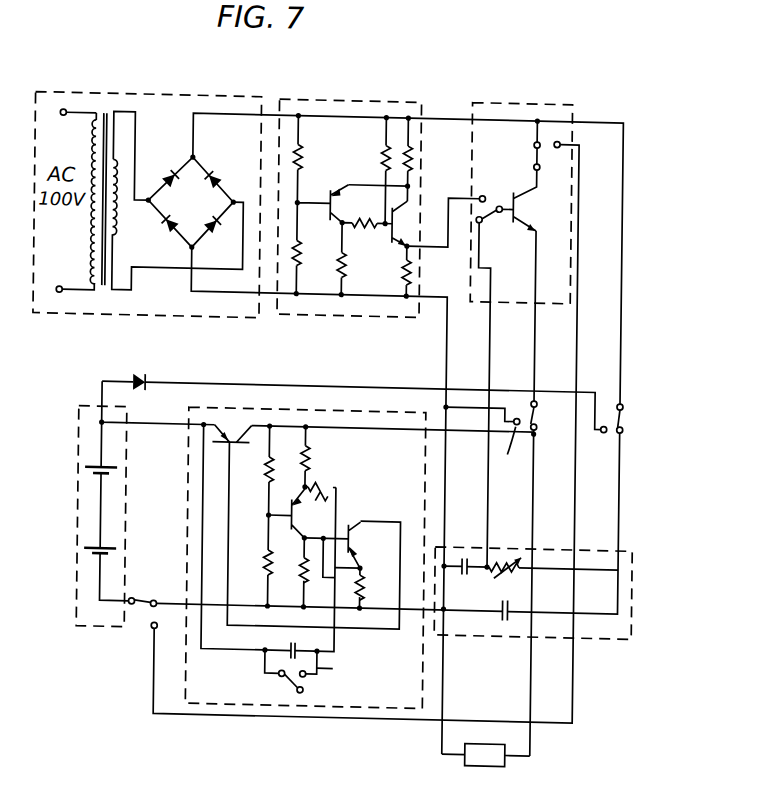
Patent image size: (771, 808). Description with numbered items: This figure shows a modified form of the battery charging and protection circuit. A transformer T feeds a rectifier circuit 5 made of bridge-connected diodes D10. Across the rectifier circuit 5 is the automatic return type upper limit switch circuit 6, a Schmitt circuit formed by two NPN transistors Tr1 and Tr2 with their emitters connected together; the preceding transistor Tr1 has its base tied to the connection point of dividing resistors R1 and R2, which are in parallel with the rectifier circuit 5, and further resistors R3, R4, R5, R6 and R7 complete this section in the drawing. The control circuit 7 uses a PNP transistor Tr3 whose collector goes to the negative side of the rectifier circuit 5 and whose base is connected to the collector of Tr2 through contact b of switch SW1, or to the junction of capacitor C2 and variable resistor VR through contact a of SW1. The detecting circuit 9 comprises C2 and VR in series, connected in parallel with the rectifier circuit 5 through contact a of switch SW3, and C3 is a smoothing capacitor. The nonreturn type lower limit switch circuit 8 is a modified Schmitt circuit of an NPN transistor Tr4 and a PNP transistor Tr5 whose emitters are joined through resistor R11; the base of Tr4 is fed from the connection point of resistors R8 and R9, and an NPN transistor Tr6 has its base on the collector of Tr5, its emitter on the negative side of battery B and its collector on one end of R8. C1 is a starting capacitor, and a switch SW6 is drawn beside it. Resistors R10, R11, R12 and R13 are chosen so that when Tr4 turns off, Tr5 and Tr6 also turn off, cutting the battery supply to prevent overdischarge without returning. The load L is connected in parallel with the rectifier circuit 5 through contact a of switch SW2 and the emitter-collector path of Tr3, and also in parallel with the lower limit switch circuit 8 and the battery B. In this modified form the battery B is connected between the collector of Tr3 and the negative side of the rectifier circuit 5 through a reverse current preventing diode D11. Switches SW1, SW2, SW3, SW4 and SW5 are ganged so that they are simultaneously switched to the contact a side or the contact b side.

The rectifier circuit 5 is at (199, 100).
The automatic return type upper limit switch circuit 6 is at (385, 102).
The control circuit 7 is at (484, 101).
The nonreturn type lower limit switch circuit 8 is at (366, 412).
The detecting circuit 9 is at (632, 546).
The transformer T is at (102, 117).
The bridge-connected diodes D10 is at (196, 176).
The dividing resistor R1 is at (310, 155).
The dividing resistor R2 is at (311, 254).
The resistor R3 is at (356, 266).
The resistor R4 is at (363, 212).
The resistor R5 is at (380, 160).
The resistor R6 is at (410, 160).
The resistor R7 is at (412, 272).
The NPN transistor Tr1 is at (343, 189).
The NPN transistor Tr2 is at (397, 227).
The PNP transistor Tr3 is at (526, 208).
The NPN transistor Tr4 is at (300, 515).
The PNP transistor Tr5 is at (354, 538).
The NPN transistor Tr6 is at (233, 440).
The switch SW1 is at (497, 204).
The switch SW2 is at (540, 155).
The switch SW3 is at (537, 400).
The switch SW4 is at (623, 402).
The switch SW5 is at (145, 613).
The switch SW6 is at (310, 688).
The reverse current preventing diode D11 is at (146, 367).
The battery B is at (100, 516).
The resistor R8 is at (256, 472).
The resistor R9 is at (265, 566).
The resistor R10 is at (325, 457).
The resistor R11 is at (328, 488).
The resistor R12 is at (300, 573).
The resistor R13 is at (366, 590).
The starting capacitor C1 is at (300, 646).
The capacitor C2 is at (467, 556).
The smoothing capacitor C3 is at (507, 618).
The variable resistor VR is at (511, 556).
The load L is at (484, 742).